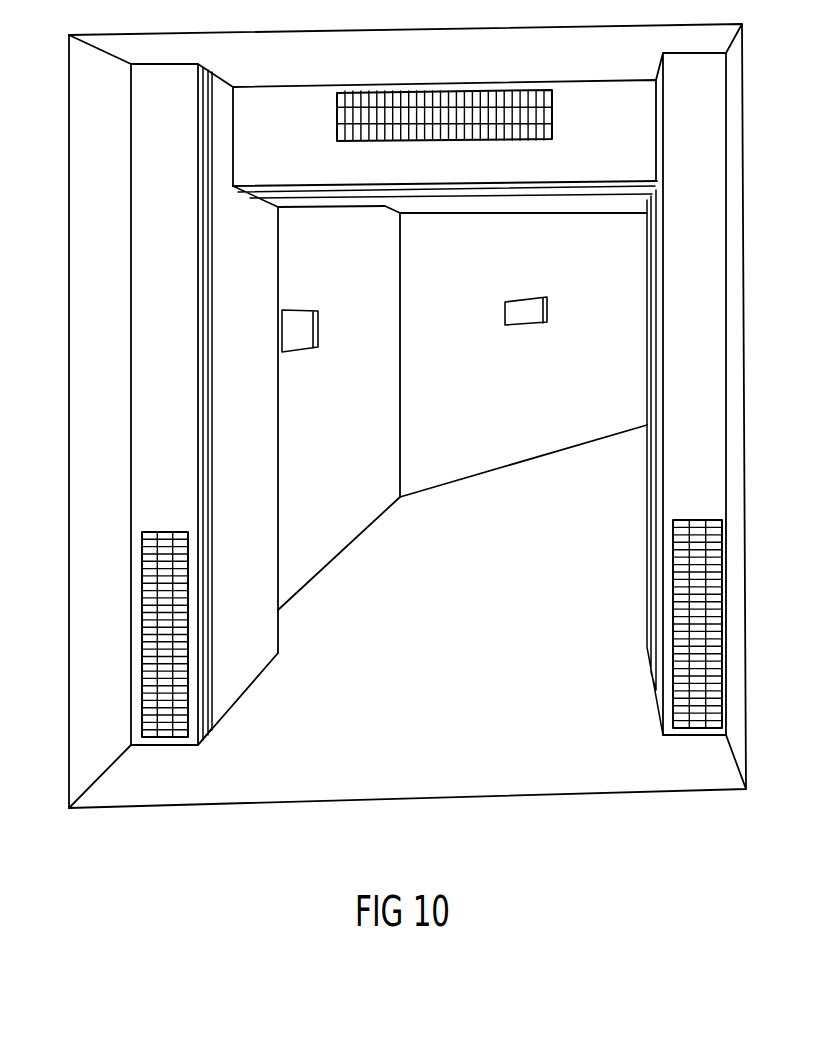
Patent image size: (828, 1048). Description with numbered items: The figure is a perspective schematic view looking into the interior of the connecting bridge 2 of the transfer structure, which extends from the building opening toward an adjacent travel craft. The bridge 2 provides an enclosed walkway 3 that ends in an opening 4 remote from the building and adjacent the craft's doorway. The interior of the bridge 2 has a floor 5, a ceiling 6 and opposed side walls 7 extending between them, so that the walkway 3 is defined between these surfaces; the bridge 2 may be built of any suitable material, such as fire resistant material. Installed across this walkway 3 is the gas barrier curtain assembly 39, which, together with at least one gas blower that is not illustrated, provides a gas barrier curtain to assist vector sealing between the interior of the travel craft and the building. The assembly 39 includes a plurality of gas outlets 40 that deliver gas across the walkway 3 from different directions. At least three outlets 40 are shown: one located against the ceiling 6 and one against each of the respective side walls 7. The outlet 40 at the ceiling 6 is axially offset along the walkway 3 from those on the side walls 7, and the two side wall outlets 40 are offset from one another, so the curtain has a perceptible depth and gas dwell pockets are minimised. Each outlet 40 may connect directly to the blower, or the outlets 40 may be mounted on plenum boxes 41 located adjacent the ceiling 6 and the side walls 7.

The connecting bridge 2 is at (315, 803).
The enclosed walkway 3 is at (378, 730).
The opening 4 is at (165, 257).
The floor 5 is at (492, 768).
The ceiling 6 is at (583, 207).
The side walls 7 is at (347, 525).
The gas barrier curtain assembly 39 is at (589, 118).
The gas outlets 40 is at (438, 193).
The plenum boxes 41 is at (278, 105).